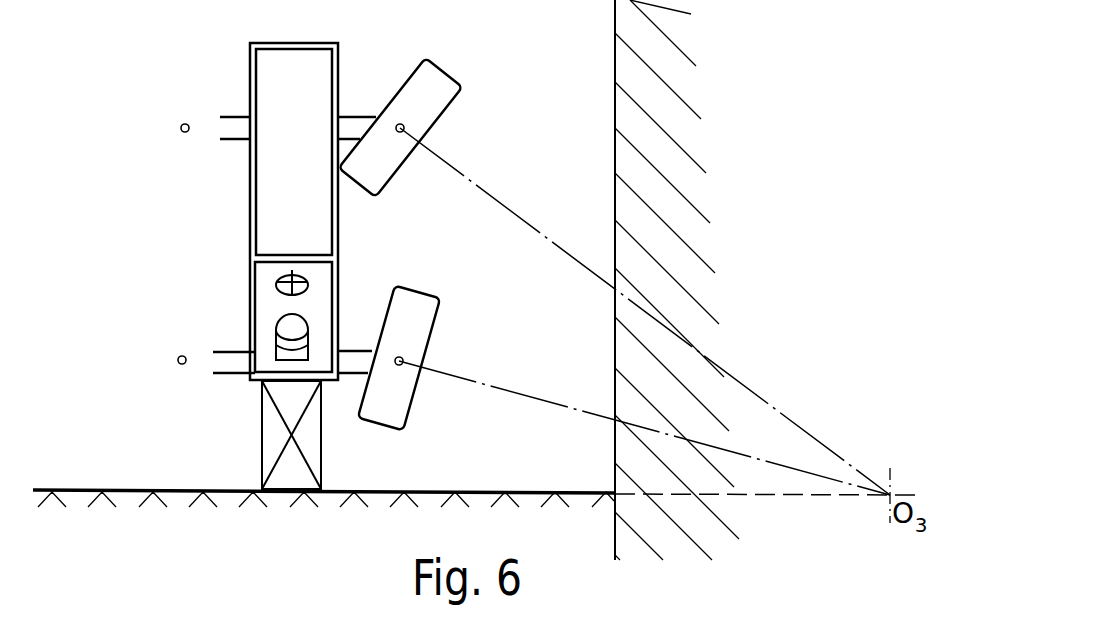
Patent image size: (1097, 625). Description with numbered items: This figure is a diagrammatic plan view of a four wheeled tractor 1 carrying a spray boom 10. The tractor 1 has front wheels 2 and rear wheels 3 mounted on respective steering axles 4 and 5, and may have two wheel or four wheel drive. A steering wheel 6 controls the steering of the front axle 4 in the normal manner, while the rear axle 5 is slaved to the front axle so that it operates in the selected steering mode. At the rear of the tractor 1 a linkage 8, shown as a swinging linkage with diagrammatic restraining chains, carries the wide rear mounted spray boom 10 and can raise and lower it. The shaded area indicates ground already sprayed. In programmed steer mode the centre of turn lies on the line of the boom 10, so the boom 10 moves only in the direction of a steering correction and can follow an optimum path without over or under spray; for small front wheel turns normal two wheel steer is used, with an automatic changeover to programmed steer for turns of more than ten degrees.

The four wheeled tractor 1 is at (270, 222).
The front wheels 2 is at (432, 99).
The rear wheels 3 is at (418, 332).
The front steering axle 4 is at (347, 127).
The rear steering axle 5 is at (230, 366).
The steering wheel 6 is at (300, 283).
The linkage 8 is at (313, 469).
The spray boom 10 is at (82, 488).